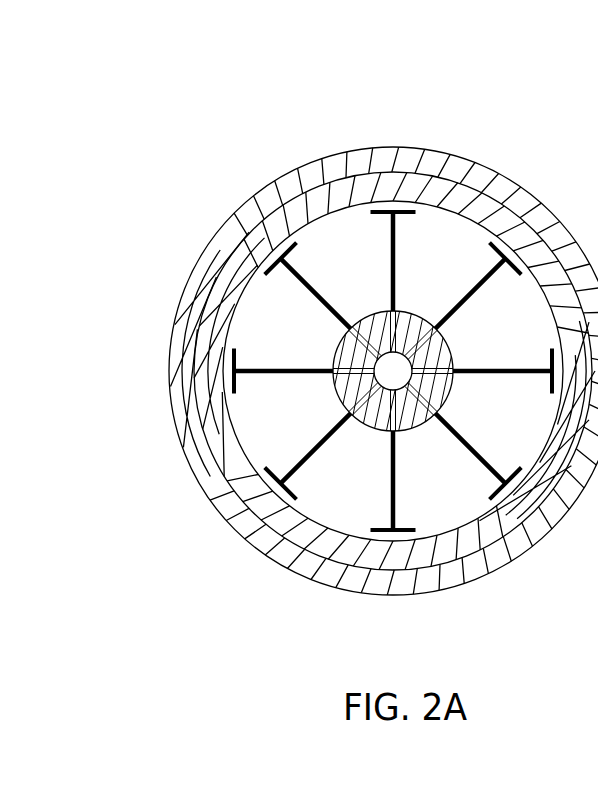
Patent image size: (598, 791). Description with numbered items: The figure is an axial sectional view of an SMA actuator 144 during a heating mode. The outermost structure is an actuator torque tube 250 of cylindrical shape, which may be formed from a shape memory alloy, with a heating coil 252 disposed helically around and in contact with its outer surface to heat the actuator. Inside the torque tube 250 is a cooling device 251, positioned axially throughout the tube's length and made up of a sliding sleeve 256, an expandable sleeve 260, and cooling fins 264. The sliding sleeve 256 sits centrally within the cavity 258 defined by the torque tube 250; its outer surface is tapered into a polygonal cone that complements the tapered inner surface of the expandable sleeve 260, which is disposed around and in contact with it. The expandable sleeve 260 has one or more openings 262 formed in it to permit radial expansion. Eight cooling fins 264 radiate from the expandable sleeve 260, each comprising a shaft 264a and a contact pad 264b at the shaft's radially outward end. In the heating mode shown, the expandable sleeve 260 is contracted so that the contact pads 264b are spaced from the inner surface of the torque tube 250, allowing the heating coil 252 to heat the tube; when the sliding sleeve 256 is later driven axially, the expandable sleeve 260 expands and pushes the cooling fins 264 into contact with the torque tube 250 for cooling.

The SMA actuator 144 is at (172, 146).
The actuator torque tube 250 is at (371, 168).
The cooling device 251 is at (434, 461).
The heating coil 252 is at (327, 165).
The sliding sleeve 256 is at (356, 418).
The cavity 258 is at (297, 349).
The expandable sleeve 260 is at (378, 428).
The openings 262 is at (372, 313).
The cooling fins 264 is at (412, 242).
The shaft 264a is at (487, 290).
The contact pad 264b is at (497, 257).